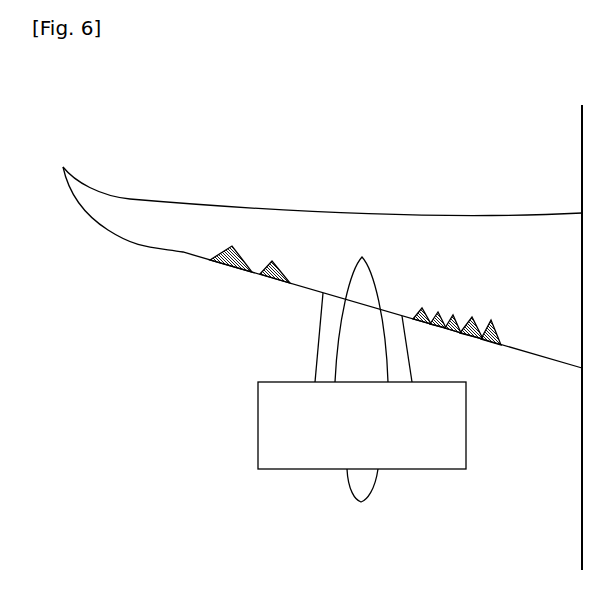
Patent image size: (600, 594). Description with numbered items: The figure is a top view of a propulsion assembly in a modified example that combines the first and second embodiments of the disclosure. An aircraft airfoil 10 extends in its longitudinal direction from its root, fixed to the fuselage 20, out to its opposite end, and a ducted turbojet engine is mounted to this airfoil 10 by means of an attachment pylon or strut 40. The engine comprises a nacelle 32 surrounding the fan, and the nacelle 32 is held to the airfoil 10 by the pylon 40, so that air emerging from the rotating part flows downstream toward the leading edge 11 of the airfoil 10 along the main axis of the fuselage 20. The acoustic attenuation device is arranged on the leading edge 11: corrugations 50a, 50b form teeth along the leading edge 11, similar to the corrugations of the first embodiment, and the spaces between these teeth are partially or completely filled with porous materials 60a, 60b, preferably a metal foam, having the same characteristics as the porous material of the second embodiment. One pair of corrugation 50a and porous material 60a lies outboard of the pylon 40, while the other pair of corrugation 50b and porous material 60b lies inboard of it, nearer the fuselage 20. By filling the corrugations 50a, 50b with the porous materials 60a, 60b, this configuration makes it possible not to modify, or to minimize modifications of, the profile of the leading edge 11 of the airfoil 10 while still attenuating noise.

The airfoil 10 is at (139, 212).
The leading edge 11 is at (115, 238).
The fuselage 20 is at (565, 530).
The nacelle 32 is at (288, 426).
The attachment pylon 40 is at (363, 283).
The corrugation 50a is at (237, 232).
The corrugation 50b is at (437, 294).
The porous material 60a is at (283, 255).
The porous material 60b is at (472, 313).